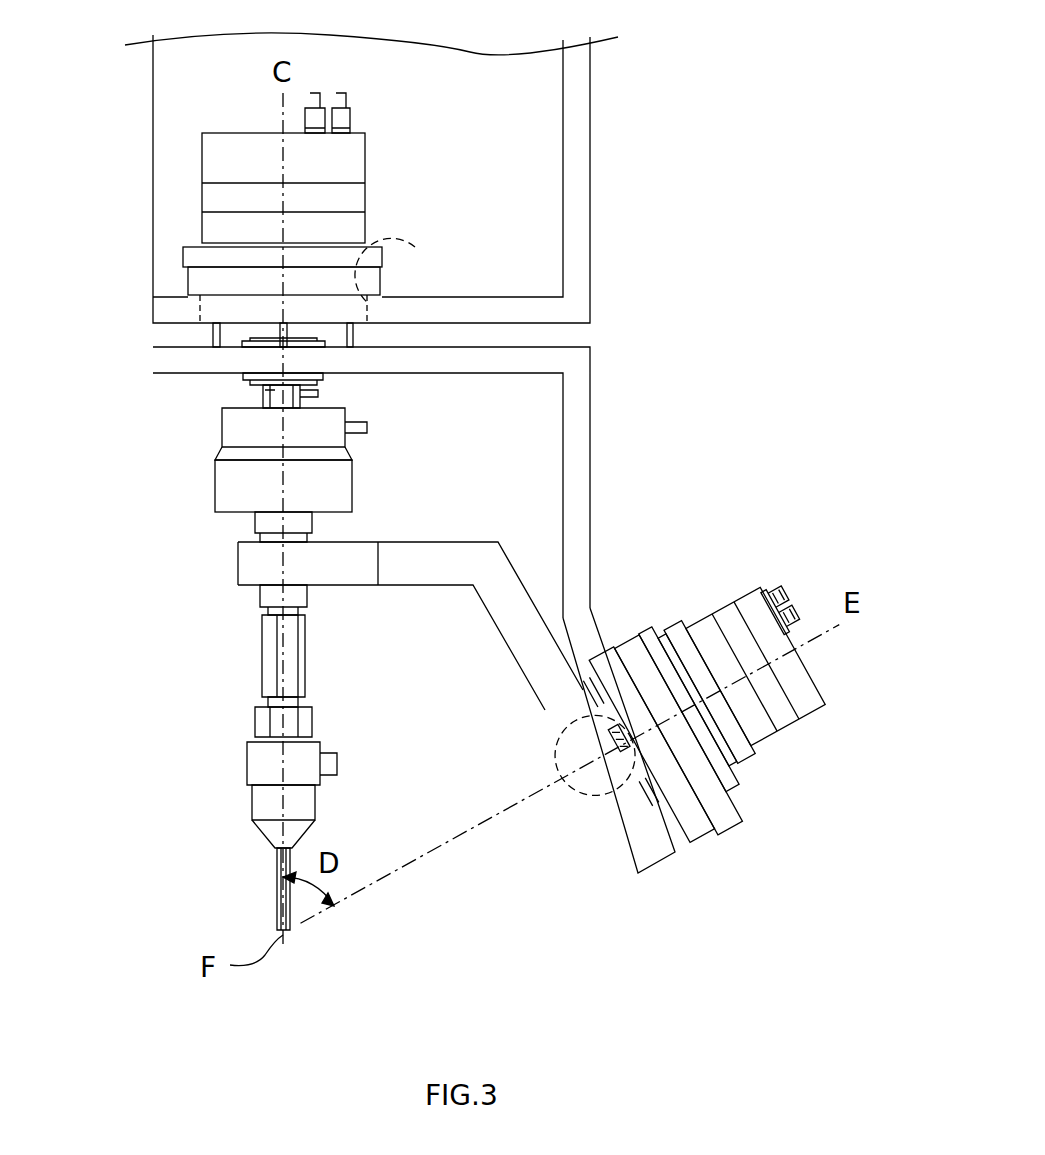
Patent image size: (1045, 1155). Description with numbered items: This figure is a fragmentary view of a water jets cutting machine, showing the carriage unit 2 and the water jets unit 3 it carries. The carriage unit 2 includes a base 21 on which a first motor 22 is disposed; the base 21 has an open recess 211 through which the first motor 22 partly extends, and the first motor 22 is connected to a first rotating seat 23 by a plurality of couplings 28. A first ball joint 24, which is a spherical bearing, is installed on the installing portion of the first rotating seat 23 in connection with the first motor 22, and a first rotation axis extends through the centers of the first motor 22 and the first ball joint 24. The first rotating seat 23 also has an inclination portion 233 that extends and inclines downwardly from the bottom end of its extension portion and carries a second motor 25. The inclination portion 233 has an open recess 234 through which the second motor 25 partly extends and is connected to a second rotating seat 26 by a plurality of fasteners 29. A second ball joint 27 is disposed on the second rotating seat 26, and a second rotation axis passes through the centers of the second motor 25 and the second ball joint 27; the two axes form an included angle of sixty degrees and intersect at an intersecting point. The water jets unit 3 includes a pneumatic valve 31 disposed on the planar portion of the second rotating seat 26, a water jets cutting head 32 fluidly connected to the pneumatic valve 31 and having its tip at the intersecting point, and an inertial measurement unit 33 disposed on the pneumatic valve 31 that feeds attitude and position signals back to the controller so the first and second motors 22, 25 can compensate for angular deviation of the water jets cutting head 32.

The carriage unit 2 is at (637, 229).
The water jets unit 3 is at (230, 787).
The base 21 is at (578, 95).
The first motor 22 is at (202, 172).
The first rotating seat 23 is at (603, 413).
The first ball joint 24 is at (250, 382).
The second motor 25 is at (747, 676).
The second rotating seat 26 is at (228, 590).
The second ball joint 27 is at (595, 755).
The couplings 28 is at (213, 333).
The fasteners 29 is at (621, 741).
The pneumatic valve 31 is at (232, 490).
The water jets cutting head 32 is at (260, 755).
The inertial measurement unit 33 is at (270, 398).
The open recess 211 is at (418, 255).
The inclination portion 233 is at (651, 744).
The open recess 234 is at (679, 735).